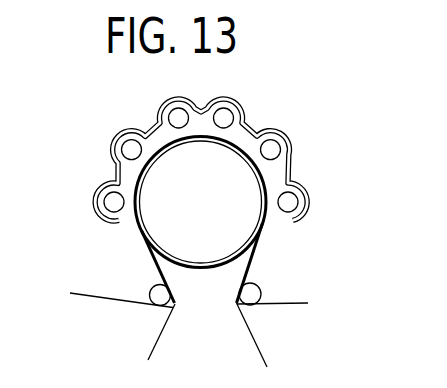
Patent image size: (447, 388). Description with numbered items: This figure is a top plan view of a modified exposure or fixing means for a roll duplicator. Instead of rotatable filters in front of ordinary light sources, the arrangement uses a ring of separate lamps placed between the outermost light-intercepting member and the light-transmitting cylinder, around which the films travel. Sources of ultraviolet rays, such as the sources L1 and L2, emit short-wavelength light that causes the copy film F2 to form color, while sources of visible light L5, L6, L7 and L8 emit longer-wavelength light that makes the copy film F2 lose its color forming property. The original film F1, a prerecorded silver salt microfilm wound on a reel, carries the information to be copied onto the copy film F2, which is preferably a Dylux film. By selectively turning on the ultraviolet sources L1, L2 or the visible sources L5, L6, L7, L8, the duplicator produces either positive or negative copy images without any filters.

The source of ultraviolet rays L1 is at (226, 115).
The source of ultraviolet rays L2 is at (130, 150).
The source of visible light L5 is at (291, 203).
The source of visible light L6 is at (272, 147).
The source of visible light L7 is at (176, 115).
The source of visible light L8 is at (113, 202).
The original film F1 is at (257, 340).
The copy film F2 is at (282, 302).